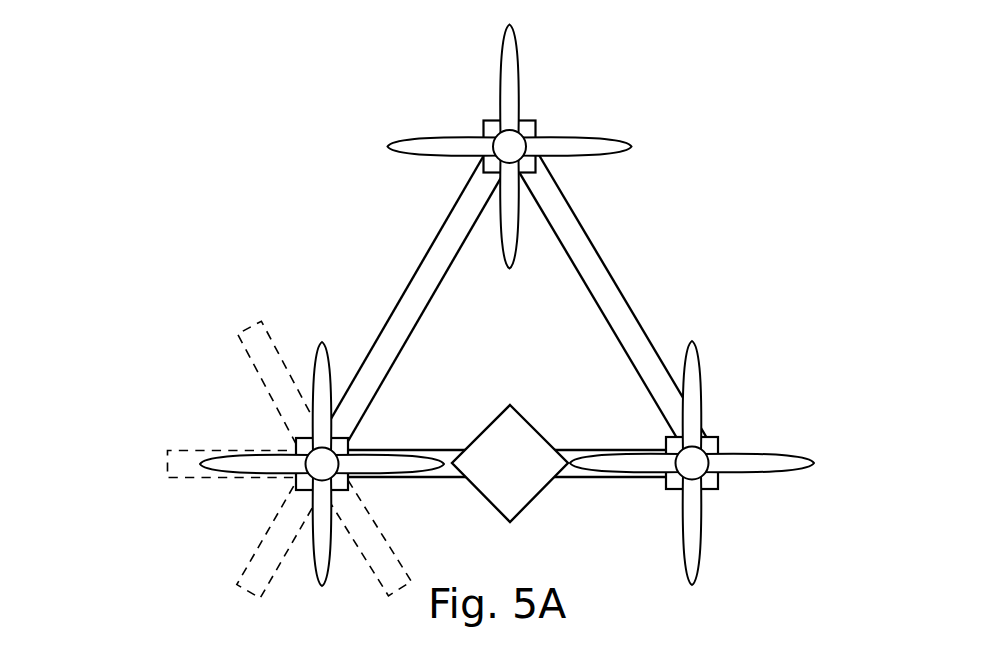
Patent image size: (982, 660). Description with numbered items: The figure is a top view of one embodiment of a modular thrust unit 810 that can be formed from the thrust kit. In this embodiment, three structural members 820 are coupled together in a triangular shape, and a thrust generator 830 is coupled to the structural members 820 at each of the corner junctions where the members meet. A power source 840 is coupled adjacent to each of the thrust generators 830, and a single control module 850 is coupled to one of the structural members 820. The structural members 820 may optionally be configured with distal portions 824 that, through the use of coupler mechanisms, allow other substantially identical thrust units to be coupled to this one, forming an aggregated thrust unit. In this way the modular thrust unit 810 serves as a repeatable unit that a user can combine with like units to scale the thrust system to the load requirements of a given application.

The modular thrust unit 810 is at (142, 94).
The structural member 820 is at (607, 290).
The distal portion 824 is at (260, 322).
The thrust generator 830 is at (504, 306).
The power source 840 is at (488, 128).
The control module 850 is at (495, 438).